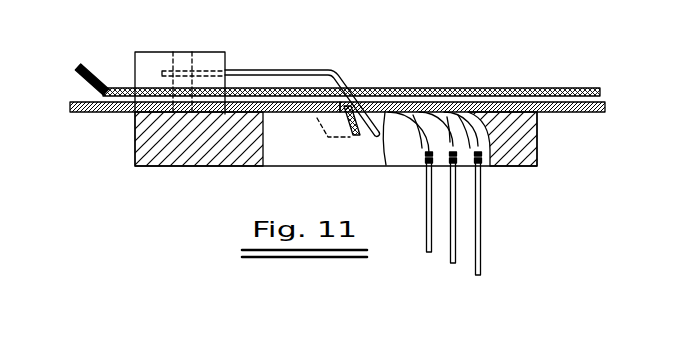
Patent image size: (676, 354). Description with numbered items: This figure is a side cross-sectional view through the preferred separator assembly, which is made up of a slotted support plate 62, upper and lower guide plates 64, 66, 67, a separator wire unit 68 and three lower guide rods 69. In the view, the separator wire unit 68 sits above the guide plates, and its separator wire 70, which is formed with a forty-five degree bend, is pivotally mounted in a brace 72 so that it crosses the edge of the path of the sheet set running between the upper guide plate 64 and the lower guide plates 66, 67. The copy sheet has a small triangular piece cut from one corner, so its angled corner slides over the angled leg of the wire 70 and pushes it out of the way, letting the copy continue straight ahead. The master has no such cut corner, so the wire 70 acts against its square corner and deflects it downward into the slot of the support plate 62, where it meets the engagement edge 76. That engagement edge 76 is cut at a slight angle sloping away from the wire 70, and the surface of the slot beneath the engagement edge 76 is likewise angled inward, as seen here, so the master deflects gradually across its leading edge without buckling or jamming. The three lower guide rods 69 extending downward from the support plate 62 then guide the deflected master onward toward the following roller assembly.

The slotted support plate 62 is at (537, 140).
The upper guide plate 64 is at (467, 87).
The lower guide plate 66 is at (112, 115).
The lower guide plate 67 is at (572, 113).
The separator wire unit 68 is at (214, 39).
The lower guide rods 69 is at (473, 275).
The separator wire 70 is at (290, 69).
The brace 72 is at (160, 52).
The engagement edge 76 is at (386, 163).